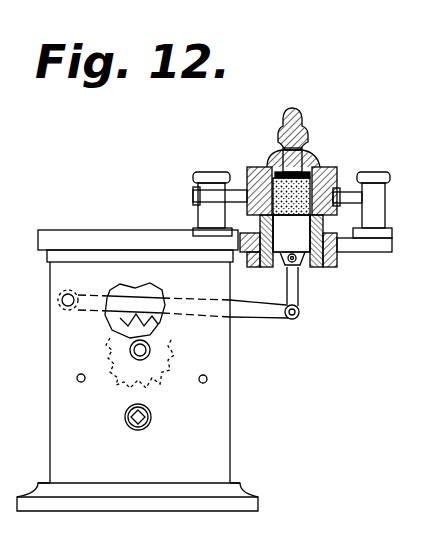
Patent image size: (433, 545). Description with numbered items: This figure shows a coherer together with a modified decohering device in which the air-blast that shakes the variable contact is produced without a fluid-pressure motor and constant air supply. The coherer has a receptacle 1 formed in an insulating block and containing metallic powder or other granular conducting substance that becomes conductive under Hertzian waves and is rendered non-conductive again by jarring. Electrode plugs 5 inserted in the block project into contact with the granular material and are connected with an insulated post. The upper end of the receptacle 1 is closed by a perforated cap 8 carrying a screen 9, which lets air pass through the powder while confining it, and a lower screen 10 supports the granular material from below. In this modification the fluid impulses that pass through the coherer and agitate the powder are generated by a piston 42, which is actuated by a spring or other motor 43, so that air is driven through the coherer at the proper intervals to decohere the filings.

The receptacle 1 is at (325, 170).
The metallic plug 5 is at (238, 185).
The cap 8 is at (300, 134).
The screen 9 is at (296, 170).
The screen 10 is at (283, 213).
The piston 42 is at (305, 268).
The spring or other motor 43 is at (123, 417).